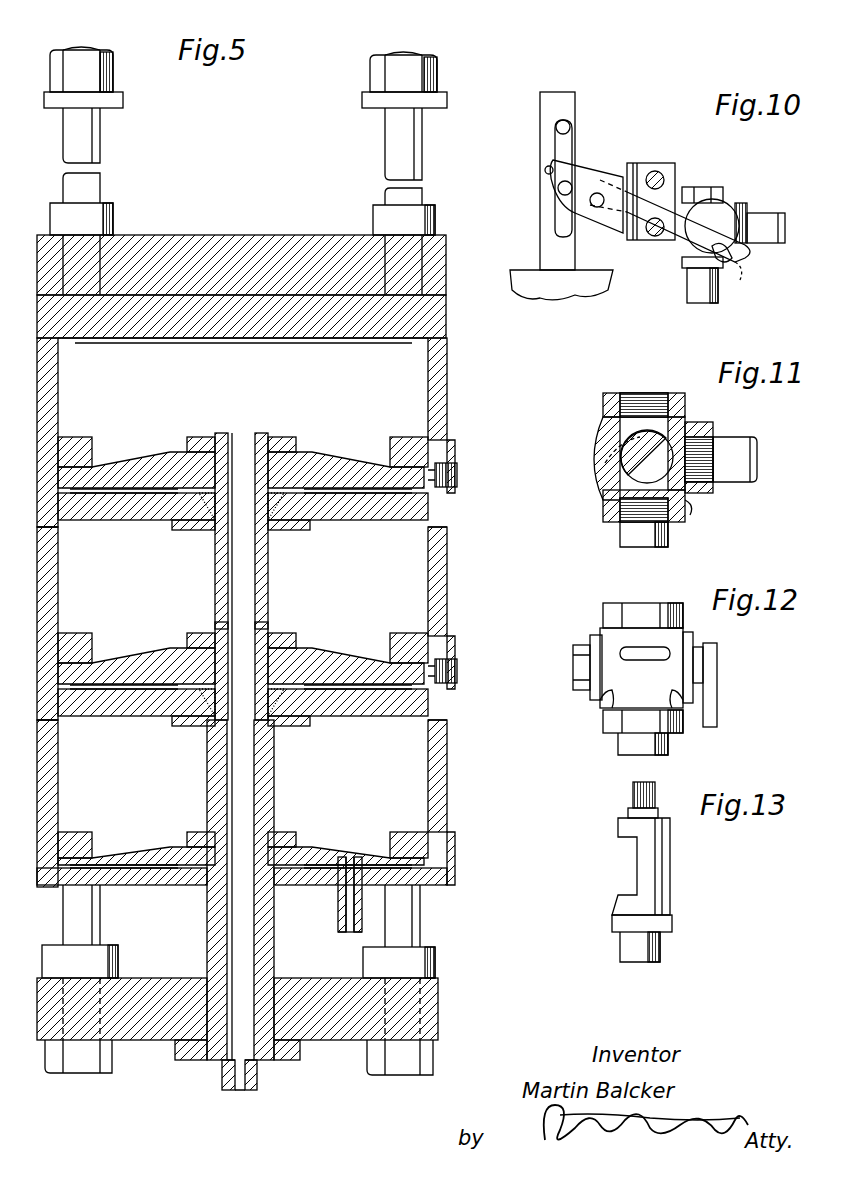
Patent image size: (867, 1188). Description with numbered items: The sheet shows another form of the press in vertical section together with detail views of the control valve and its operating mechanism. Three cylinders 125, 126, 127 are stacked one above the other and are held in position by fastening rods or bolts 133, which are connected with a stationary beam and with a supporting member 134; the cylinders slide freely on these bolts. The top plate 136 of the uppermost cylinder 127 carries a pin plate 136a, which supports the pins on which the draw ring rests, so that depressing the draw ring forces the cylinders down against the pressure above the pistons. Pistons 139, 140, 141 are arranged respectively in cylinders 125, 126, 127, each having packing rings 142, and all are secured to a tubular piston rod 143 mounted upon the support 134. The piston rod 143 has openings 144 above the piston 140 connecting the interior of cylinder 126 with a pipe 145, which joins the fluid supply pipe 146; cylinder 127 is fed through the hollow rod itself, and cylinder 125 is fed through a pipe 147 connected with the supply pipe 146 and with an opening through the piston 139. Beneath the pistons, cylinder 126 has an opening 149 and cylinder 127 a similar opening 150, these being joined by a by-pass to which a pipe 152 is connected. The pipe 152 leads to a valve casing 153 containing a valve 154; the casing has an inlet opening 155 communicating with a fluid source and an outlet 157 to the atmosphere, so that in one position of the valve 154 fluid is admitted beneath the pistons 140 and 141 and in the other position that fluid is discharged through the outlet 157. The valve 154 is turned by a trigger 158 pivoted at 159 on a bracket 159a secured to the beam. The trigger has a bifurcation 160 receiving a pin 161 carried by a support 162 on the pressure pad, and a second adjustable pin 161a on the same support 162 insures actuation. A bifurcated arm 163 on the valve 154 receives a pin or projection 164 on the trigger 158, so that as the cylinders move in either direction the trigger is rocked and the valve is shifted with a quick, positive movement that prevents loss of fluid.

In FIG. 5, the lowermost cylinder 125 is at (418, 795).
In FIG. 5, the cylinder 126 is at (418, 588).
In FIG. 5, the cylinder 127 is at (418, 404).
In FIG. 5, the fastening rods or bolts 133 is at (100, 150).
In FIG. 5, the supporting member 134 is at (440, 1010).
In FIG. 5, the top plate 136 is at (288, 303).
In FIG. 5, the pin plate 136a is at (203, 245).
In FIG. 10, the pin plate 136a is at (523, 270).
In FIG. 5, the piston 139 is at (445, 884).
In FIG. 5, the piston 140 is at (322, 660).
In FIG. 5, the piston 141 is at (333, 468).
In FIG. 5, the packing rings 142 is at (442, 447).
In FIG. 5, the tubular piston rod 143 is at (207, 925).
In FIG. 5, the openings 144 is at (214, 630).
In FIG. 5, the pipe 145 is at (258, 1078).
In FIG. 5, the fluid supply pipe 146 is at (352, 858).
In FIG. 5, the pipe 147 is at (337, 921).
In FIG. 5, the opening 149 is at (452, 680).
In FIG. 5, the opening 150 is at (452, 480).
In FIG. 10, the pipe 152 is at (690, 300).
In FIG. 11, the pipe 152 is at (625, 545).
In FIG. 12, the pipe 152 is at (620, 752).
In FIG. 10, the valve casing 153 is at (735, 200).
In FIG. 11, the valve casing 153 is at (690, 425).
In FIG. 12, the valve casing 153 is at (612, 636).
In FIG. 11, the valve 154 is at (648, 445).
In FIG. 13, the valve 154 is at (660, 866).
In FIG. 10, the opening 155 is at (765, 245).
In FIG. 11, the opening 155 is at (740, 440).
In FIG. 11, the outlet 157 is at (600, 448).
In FIG. 12, the outlet 157 is at (637, 655).
In FIG. 10, the trigger 158 is at (676, 248).
In FIG. 10, the pivot 159 is at (600, 193).
In FIG. 10, the bracket 159a is at (672, 152).
In FIG. 10, the bifurcation 160 is at (553, 165).
In FIG. 10, the pin 161 is at (557, 188).
In FIG. 10, the second pin 161a is at (570, 128).
In FIG. 10, the support 162 is at (545, 105).
In FIG. 10, the bifurcated arm 163 is at (722, 258).
In FIG. 11, the bifurcated arm 163 is at (693, 510).
In FIG. 12, the bifurcated arm 163 is at (712, 712).
In FIG. 10, the pin or projection 164 is at (735, 262).